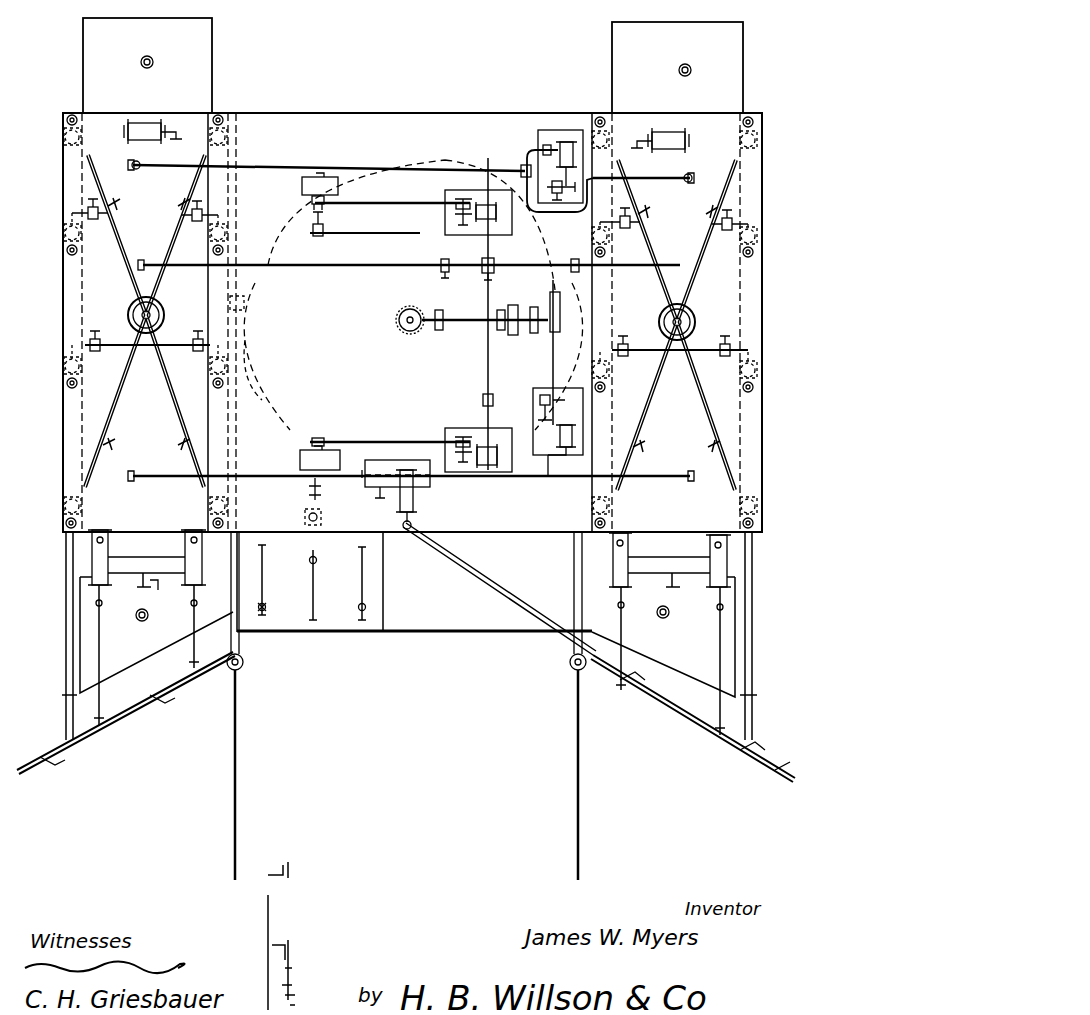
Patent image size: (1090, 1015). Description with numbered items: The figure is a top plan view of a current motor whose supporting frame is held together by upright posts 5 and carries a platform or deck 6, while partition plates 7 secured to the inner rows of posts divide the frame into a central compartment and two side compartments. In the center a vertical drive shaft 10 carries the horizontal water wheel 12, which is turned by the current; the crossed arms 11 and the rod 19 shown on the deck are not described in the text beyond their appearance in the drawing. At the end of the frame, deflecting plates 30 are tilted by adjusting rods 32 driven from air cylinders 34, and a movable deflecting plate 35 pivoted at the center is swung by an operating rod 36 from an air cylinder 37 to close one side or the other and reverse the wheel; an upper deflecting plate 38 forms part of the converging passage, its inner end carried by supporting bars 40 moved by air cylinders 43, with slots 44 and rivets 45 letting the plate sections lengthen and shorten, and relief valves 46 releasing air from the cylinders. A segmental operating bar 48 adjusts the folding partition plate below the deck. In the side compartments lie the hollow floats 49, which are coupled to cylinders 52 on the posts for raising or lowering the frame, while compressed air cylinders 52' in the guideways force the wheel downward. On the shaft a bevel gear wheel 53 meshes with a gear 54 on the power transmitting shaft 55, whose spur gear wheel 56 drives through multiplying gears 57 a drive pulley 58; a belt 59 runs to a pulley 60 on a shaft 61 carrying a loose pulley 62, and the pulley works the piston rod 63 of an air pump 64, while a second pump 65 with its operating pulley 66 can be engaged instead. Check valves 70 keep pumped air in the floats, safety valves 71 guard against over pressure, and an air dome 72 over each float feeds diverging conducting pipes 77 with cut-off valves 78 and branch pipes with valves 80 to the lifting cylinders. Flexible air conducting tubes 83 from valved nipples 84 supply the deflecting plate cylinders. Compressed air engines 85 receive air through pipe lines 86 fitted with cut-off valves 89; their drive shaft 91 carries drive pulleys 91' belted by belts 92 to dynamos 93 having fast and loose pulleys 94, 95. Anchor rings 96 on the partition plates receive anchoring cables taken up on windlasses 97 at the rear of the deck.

The upright posts 5 is at (770, 515).
The platform or deck 6 is at (513, 570).
The partition plates 7 is at (228, 302).
The drive shaft 10 is at (402, 315).
The crossed arms 11 is at (165, 245).
The water wheel 12 is at (275, 222).
The cross rod 19 is at (725, 352).
The deflecting plates 30 is at (700, 725).
The adjusting rods 32 is at (720, 700).
The air cylinders 34 is at (727, 578).
The movable deflecting plate 35 is at (510, 598).
The operating rod 36 is at (413, 510).
The air cylinder 37 is at (420, 487).
The upper deflecting plate 38 is at (305, 618).
The supporting bars 40 is at (628, 543).
The air cylinders 43 is at (305, 517).
The slots 44 is at (358, 555).
The rivets 45 is at (358, 600).
The relief valves 46 is at (727, 545).
The segmental operating bar 48 is at (385, 262).
The floats 49 is at (411, 357).
The cylinders 52 is at (412, 305).
The compressed air cylinders 52' is at (265, 356).
The bevel gear wheel 53 is at (400, 325).
The gear 54 is at (439, 331).
The power transmitting shaft 55 is at (468, 322).
The spur gear wheel 56 is at (513, 336).
The multiplying gears 57 is at (534, 334).
The drive pulley 58 is at (527, 215).
The belt 59 is at (560, 318).
The pulley 60 is at (556, 350).
The shaft 61 is at (595, 430).
The loose pulley 62 is at (533, 400).
The piston rod 63 is at (583, 440).
The air pump 64 is at (566, 447).
The second pump 65 is at (566, 142).
The operating pulley 66 is at (557, 195).
The check valves 70 is at (694, 477).
The safety valves 71 is at (658, 612).
The air dome 72 is at (688, 320).
The conducting pipes 77 is at (165, 248).
The cut-off valves 78 is at (715, 445).
The valves 80 is at (710, 224).
The flexible air conducting tubes 83 is at (140, 585).
The valved nipples 84 is at (160, 582).
The compressed air engines 85 is at (490, 468).
The pipe lines 86 is at (620, 265).
The cut-off valves 89 is at (485, 400).
The drive shaft 91 is at (478, 326).
The drive pulleys 91' is at (444, 310).
The belts 92 is at (400, 441).
The dynamos 93 is at (300, 455).
The fast pulley 94 is at (314, 437).
The loose pulley 95 is at (325, 440).
The anchor rings 96 is at (586, 662).
The windlasses 97 is at (676, 132).